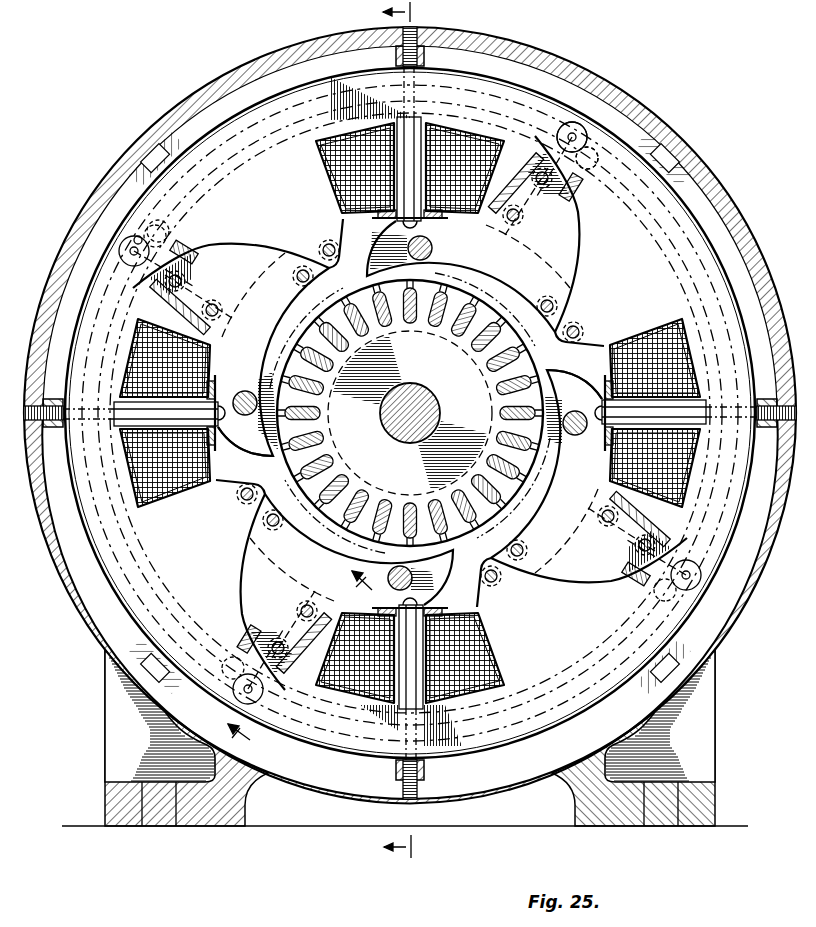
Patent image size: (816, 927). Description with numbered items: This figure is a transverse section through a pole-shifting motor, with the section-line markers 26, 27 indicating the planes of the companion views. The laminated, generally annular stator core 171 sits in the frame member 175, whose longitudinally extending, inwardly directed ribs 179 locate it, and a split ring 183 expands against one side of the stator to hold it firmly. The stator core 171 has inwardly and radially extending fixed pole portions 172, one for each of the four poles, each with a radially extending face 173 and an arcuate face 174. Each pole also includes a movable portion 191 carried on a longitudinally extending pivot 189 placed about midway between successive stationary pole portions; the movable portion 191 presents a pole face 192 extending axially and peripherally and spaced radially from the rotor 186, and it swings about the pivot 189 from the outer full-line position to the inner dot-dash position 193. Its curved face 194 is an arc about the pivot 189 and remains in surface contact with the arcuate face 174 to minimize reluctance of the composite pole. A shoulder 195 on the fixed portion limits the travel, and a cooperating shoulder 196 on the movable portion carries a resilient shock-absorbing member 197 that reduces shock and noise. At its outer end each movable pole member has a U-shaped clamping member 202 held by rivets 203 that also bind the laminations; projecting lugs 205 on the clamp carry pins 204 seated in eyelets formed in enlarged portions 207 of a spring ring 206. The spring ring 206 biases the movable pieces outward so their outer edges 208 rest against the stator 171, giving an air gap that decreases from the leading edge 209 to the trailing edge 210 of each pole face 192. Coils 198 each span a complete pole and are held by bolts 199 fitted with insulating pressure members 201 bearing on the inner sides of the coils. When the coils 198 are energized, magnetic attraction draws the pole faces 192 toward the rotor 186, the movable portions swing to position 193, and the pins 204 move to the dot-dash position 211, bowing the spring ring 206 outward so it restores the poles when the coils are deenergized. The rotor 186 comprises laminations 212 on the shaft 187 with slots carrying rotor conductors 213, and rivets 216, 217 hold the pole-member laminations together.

The section line 26- 26 is at (415, 430).
The section line 27- 27 is at (300, 657).
The laminated stator core 171 is at (683, 203).
The fixed pole portions 172 is at (405, 395).
The radially extending faces 173 is at (333, 232).
The arcuate faces 174 is at (276, 240).
The frame member 175 is at (655, 115).
The ribs 179 is at (170, 130).
The split ring 183 is at (622, 722).
The rotor 186 is at (548, 372).
The rotor shaft 187 is at (432, 400).
The pivots 189 is at (430, 252).
The movable pole member 191 is at (263, 618).
The pole face 192 is at (298, 332).
The inner position 193 is at (308, 300).
The curved face 194 is at (522, 224).
The shoulder 195 is at (564, 200).
The cooperating shoulder 196 is at (572, 122).
The resilient shock-absorbing member 197 is at (590, 150).
The coils 198 is at (462, 133).
The bolts 199 is at (420, 224).
The insulating pressure members 201 is at (386, 226).
The U-shaped clamping member 202 is at (176, 286).
The rivets 203 is at (217, 299).
The pins 204 is at (125, 240).
The projecting lugs 205 is at (142, 268).
The spring ring 206 is at (250, 125).
The enlarged portions 207 is at (122, 245).
The outer edges 208 is at (562, 130).
The leading edge 209 is at (298, 284).
The trailing edge 210 is at (266, 460).
The dot-dash position of pins 211 is at (242, 650).
The laminations 212 is at (410, 413).
The rotor conductors 213 is at (466, 318).
The rivets 216 is at (547, 300).
The rivets 217 is at (578, 330).